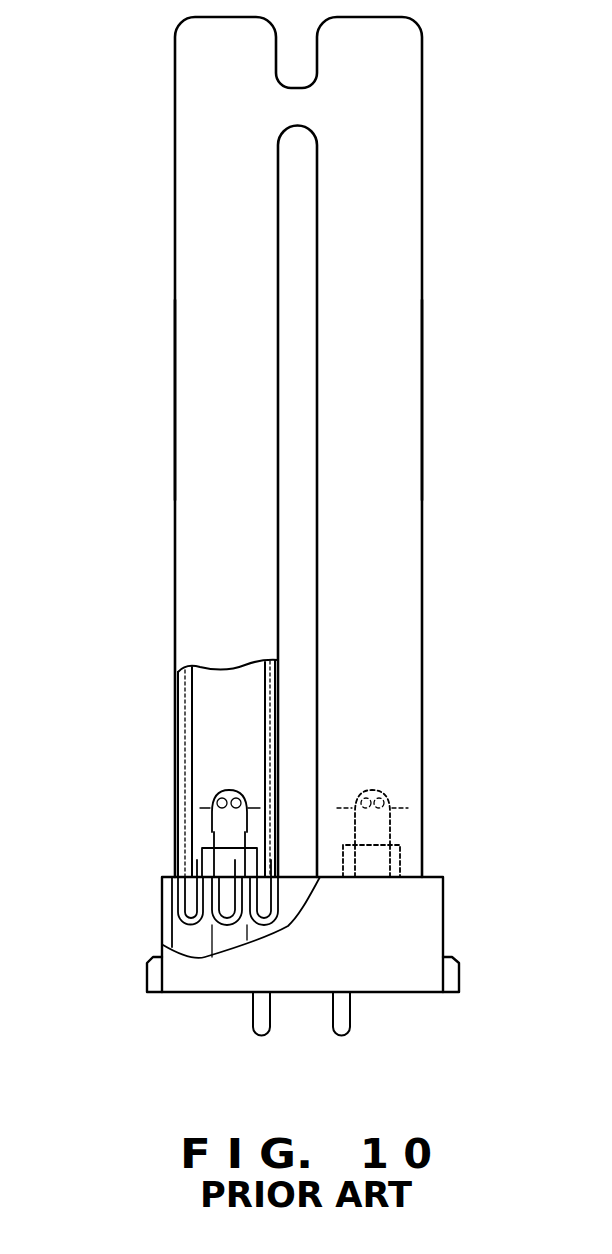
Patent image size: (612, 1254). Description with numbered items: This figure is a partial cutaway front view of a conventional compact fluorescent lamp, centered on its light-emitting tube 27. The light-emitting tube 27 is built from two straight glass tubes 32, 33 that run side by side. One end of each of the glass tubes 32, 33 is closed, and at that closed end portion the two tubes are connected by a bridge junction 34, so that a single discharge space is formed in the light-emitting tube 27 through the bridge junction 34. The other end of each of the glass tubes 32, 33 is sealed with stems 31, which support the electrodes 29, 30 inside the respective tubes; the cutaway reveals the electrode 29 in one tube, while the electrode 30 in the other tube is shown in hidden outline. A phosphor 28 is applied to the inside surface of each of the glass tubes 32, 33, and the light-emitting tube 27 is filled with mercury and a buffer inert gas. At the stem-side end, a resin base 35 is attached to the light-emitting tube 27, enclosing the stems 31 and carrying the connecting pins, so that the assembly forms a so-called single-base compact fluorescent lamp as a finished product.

The light-emitting tube 27 is at (160, 168).
The phosphor 28 is at (177, 699).
The electrode 29 is at (218, 797).
The electrode 30 is at (390, 792).
The stem 31 is at (205, 845).
The glass tube 32 is at (207, 420).
The glass tube 33 is at (390, 400).
The bridge junction 34 is at (302, 110).
The resin base 35 is at (432, 937).